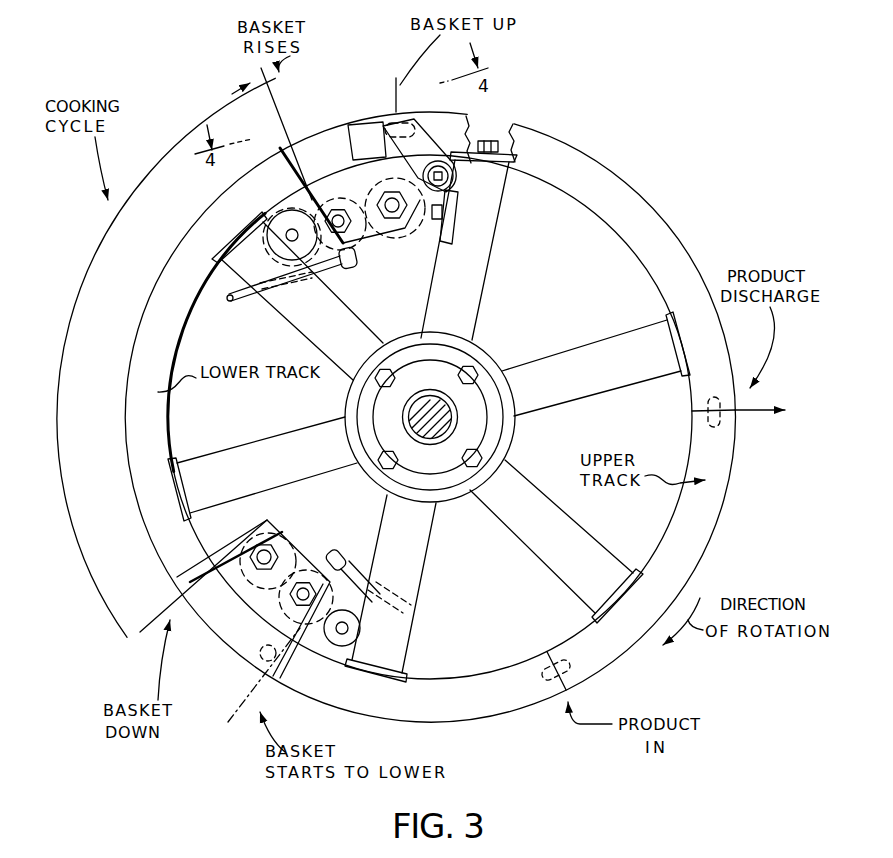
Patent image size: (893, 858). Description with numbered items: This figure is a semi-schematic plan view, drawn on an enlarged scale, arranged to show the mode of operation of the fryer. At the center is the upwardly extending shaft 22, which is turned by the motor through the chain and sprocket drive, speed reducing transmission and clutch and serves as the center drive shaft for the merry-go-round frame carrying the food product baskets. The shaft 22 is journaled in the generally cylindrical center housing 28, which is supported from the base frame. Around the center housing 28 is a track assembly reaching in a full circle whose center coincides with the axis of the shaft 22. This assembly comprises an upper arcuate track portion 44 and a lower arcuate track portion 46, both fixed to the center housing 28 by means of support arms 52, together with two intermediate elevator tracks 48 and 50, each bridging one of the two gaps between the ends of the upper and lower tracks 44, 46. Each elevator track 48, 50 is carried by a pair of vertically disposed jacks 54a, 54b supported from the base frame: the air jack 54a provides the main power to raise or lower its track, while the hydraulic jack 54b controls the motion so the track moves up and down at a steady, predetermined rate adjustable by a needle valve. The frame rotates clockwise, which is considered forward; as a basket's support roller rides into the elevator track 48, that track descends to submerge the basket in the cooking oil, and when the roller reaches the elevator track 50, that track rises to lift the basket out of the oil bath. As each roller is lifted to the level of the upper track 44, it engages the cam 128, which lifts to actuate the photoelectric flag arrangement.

The shaft 22 is at (455, 425).
The center housing 28 is at (478, 362).
The upper arcuate track portion 44 is at (692, 548).
The lower arcuate track portion 46 is at (148, 445).
The elevator track 48 is at (235, 630).
The elevator track 50 is at (316, 142).
The support arms 52 is at (563, 360).
The air jack 54a is at (408, 225).
The hydraulic jack 54b is at (355, 256).
The cam 128 is at (366, 130).